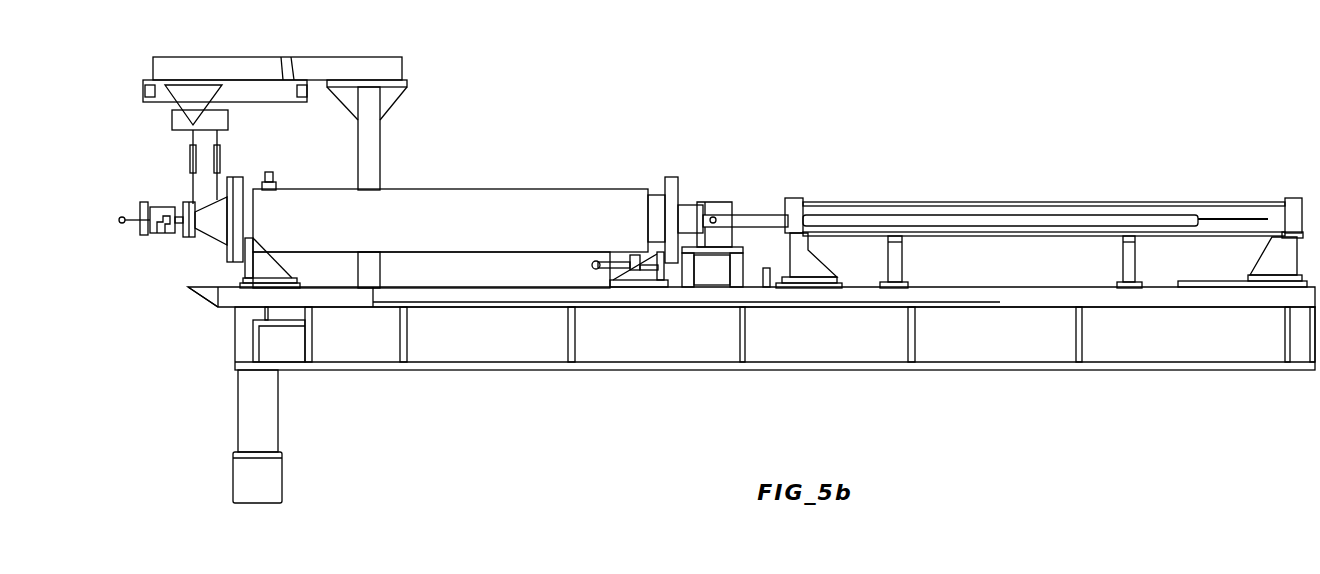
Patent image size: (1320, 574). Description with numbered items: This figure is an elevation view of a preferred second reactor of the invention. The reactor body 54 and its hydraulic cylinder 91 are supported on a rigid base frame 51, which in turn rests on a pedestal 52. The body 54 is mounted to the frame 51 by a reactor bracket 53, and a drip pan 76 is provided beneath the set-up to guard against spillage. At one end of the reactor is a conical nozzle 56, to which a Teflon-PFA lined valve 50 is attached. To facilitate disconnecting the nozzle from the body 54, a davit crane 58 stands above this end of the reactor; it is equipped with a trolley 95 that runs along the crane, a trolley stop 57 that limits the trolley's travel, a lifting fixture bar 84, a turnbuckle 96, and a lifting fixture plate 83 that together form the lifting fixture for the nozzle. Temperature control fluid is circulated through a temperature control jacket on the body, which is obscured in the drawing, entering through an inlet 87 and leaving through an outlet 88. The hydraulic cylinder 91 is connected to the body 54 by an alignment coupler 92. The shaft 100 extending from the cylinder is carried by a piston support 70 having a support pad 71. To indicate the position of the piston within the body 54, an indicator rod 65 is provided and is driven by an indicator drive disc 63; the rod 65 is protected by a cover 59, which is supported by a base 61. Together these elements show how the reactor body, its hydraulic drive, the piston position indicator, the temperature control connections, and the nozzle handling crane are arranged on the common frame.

The Teflon-PFA lined valve 50 is at (158, 238).
The rigid base frame 51 is at (420, 365).
The pedestal 52 is at (255, 415).
The reactor bracket 53 is at (222, 290).
The reactor body 54 is at (495, 210).
The conical nozzle 56 is at (217, 227).
The trolley stop 57 is at (307, 92).
The davit crane 58 is at (387, 66).
The cover 59 is at (1035, 226).
The base 61 is at (893, 258).
The indicator drive disc 63 is at (724, 202).
The indicator rod 65 is at (740, 217).
The piston support 70 is at (738, 268).
The support pad 71 is at (713, 282).
The drip pan 76 is at (200, 297).
The lifting fixture plate 83 is at (197, 204).
The lifting fixture bar 84 is at (228, 118).
The inlet 87 is at (610, 268).
The outlet 88 is at (270, 172).
The hydraulic cylinder 91 is at (993, 202).
The alignment coupler 92 is at (670, 191).
The trolley 95 is at (182, 97).
The turnbuckle 96 is at (190, 158).
The shaft 100 is at (771, 212).